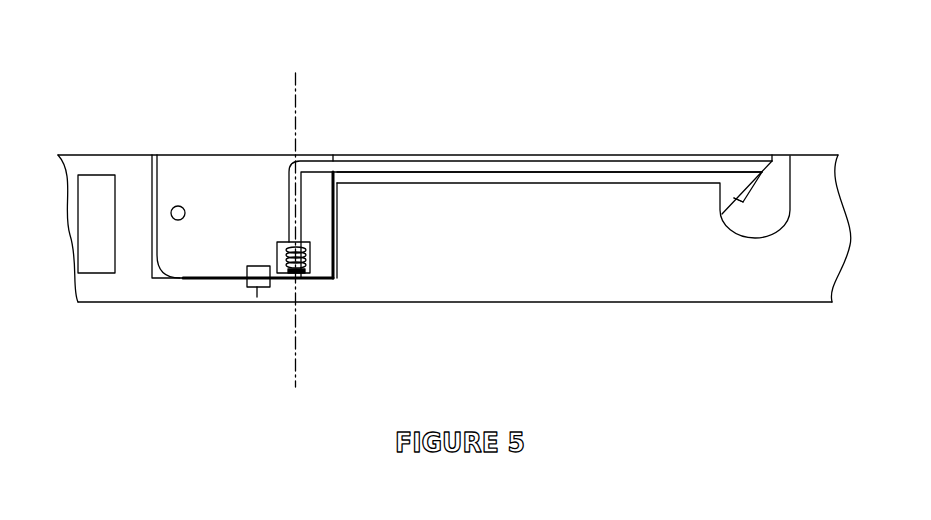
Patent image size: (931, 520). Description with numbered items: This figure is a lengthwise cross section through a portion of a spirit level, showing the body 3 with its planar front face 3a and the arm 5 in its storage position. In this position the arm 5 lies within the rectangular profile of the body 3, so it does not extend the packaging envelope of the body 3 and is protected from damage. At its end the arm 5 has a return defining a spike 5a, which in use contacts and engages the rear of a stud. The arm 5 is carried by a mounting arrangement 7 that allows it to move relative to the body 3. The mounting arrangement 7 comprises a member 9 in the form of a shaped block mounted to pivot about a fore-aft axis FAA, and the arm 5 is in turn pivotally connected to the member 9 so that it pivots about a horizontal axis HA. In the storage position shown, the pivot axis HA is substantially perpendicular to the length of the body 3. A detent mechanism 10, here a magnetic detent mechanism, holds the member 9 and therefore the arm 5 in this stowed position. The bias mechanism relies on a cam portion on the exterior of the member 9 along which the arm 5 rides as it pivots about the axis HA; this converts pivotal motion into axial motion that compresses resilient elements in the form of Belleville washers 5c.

The body 3 is at (433, 258).
The planar front face 3a is at (522, 186).
The arm 5 is at (462, 167).
The spike 5a is at (736, 200).
The Belleville washers 5c is at (307, 262).
The mounting arrangement 7 is at (217, 248).
The member 9 is at (223, 168).
The detent mechanism 10 is at (257, 297).
The fore-aft axis FAA is at (179, 205).
The horizontal axis HA is at (297, 342).